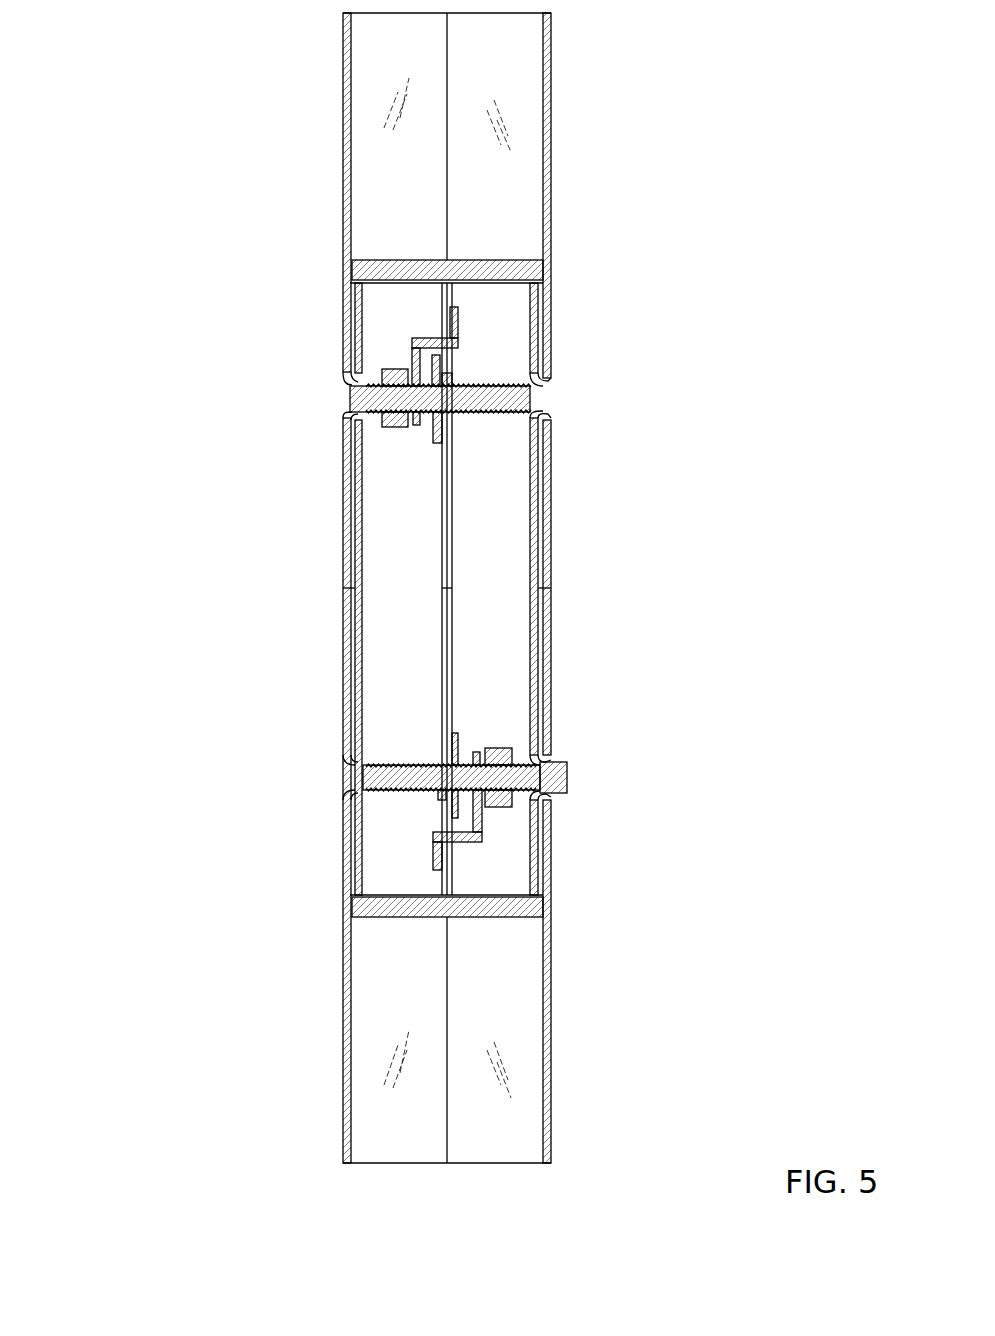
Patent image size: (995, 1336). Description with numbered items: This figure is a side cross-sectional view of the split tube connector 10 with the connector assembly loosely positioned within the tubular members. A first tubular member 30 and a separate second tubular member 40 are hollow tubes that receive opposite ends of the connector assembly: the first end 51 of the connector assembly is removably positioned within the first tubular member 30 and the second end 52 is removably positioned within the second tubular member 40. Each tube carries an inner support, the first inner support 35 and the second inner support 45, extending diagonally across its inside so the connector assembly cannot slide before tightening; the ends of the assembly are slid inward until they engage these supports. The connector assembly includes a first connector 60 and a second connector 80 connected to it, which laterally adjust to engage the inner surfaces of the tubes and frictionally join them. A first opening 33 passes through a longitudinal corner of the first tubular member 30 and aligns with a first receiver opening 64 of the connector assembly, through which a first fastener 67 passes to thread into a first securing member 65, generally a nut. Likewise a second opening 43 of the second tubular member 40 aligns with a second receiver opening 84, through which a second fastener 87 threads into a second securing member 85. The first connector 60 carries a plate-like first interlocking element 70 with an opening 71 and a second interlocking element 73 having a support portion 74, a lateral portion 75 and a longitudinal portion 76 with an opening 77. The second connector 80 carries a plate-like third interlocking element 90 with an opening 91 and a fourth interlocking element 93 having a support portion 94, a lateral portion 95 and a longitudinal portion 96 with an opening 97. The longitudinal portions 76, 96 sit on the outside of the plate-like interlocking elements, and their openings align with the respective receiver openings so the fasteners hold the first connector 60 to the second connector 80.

The split tube connector 10 is at (157, 185).
The first tubular member 30 is at (347, 142).
The first inner support 35 is at (518, 260).
The first end 51 is at (472, 282).
The second tubular member 40 is at (346, 955).
The second inner support 45 is at (386, 917).
The second end 52 is at (470, 896).
The first connector 60 is at (357, 550).
The second connector 80 is at (540, 540).
The first opening 33 is at (357, 383).
The first receiver opening 64 is at (360, 440).
The first fastener 67 is at (352, 400).
The first securing member 65 is at (393, 428).
The lateral portion 95 is at (405, 330).
The fourth interlocking element 93 is at (433, 340).
The support portion 94 is at (460, 315).
The longitudinal portion 96 is at (414, 366).
The first interlocking element 70 is at (440, 358).
The opening 71 is at (452, 378).
The opening 97 is at (430, 425).
The third interlocking element 90 is at (535, 712).
The second opening 43 is at (560, 778).
The second receiver opening 84 is at (545, 790).
The opening 77 is at (459, 740).
The second securing member 85 is at (510, 752).
The second fastener 87 is at (512, 800).
The longitudinal portion 76 is at (458, 810).
The opening 91 is at (442, 795).
The second interlocking element 73 is at (490, 845).
The lateral portion 75 is at (460, 838).
The support portion 74 is at (436, 860).